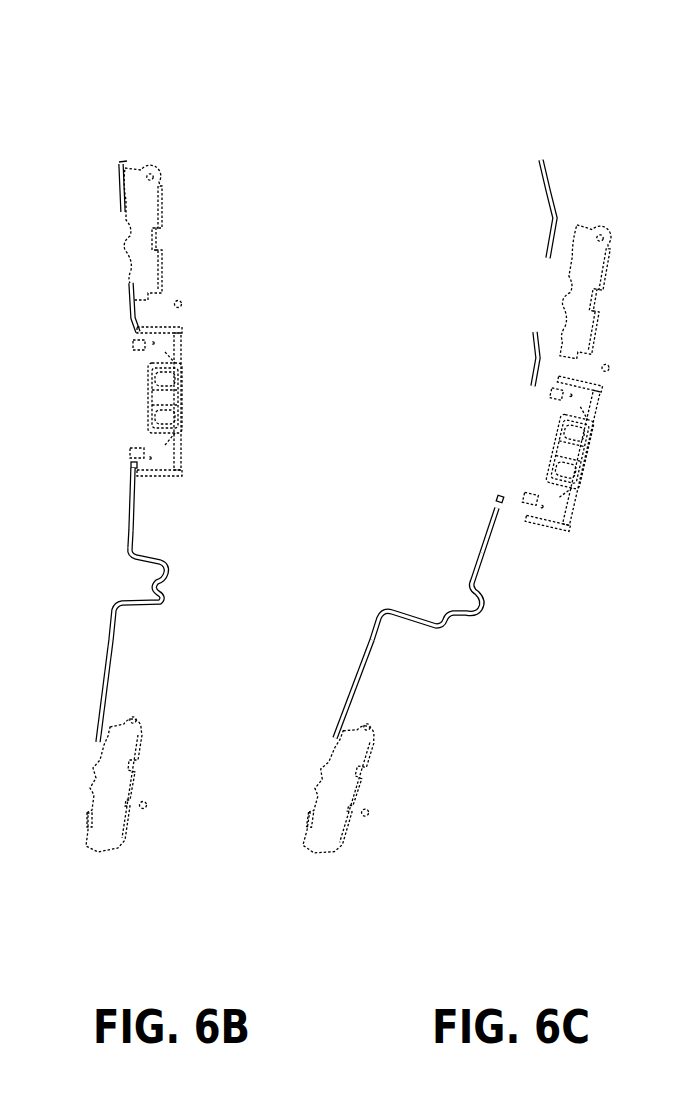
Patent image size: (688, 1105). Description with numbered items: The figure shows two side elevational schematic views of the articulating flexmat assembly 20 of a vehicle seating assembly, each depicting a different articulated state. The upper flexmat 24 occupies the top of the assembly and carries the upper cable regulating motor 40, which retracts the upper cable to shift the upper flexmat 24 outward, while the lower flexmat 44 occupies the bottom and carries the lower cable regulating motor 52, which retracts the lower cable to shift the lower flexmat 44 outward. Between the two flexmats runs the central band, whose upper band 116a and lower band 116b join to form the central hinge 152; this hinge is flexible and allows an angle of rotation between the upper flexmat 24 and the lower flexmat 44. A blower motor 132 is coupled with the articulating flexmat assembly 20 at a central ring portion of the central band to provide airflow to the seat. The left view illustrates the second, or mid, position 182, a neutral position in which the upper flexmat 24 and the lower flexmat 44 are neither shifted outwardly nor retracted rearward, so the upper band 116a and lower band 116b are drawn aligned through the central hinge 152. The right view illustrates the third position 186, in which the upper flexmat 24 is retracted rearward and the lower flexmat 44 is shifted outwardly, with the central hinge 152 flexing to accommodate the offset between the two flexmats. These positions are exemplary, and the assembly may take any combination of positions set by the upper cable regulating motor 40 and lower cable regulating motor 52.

In FIG. 6B, the second position 182 is at (124, 73).
In FIG. 6C, the third position 186 is at (541, 73).
In FIG. 6B, the articulating flexmat assembly 20 is at (92, 161).
In FIG. 6C, the articulating flexmat assembly 20 is at (517, 184).
In FIG. 6B, the upper flexmat 24 is at (97, 286).
In FIG. 6C, the upper flexmat 24 is at (499, 319).
In FIG. 6B, the upper cable regulating motor 40 is at (176, 236).
In FIG. 6C, the upper cable regulating motor 40 is at (605, 297).
In FIG. 6B, the lower flexmat 44 is at (123, 593).
In FIG. 6C, the lower flexmat 44 is at (424, 609).
In FIG. 6B, the lower cable regulating motor 52 is at (81, 784).
In FIG. 6C, the lower cable regulating motor 52 is at (309, 788).
In FIG. 6B, the upper band 116a is at (91, 487).
In FIG. 6C, the upper band 116a is at (439, 514).
In FIG. 6B, the lower band 116b is at (164, 684).
In FIG. 6C, the lower band 116b is at (404, 691).
In FIG. 6B, the blower motor 132 is at (118, 401).
In FIG. 6C, the blower motor 132 is at (527, 453).
In FIG. 6B, the central hinge 152 is at (168, 571).
In FIG. 6C, the central hinge 152 is at (482, 606).